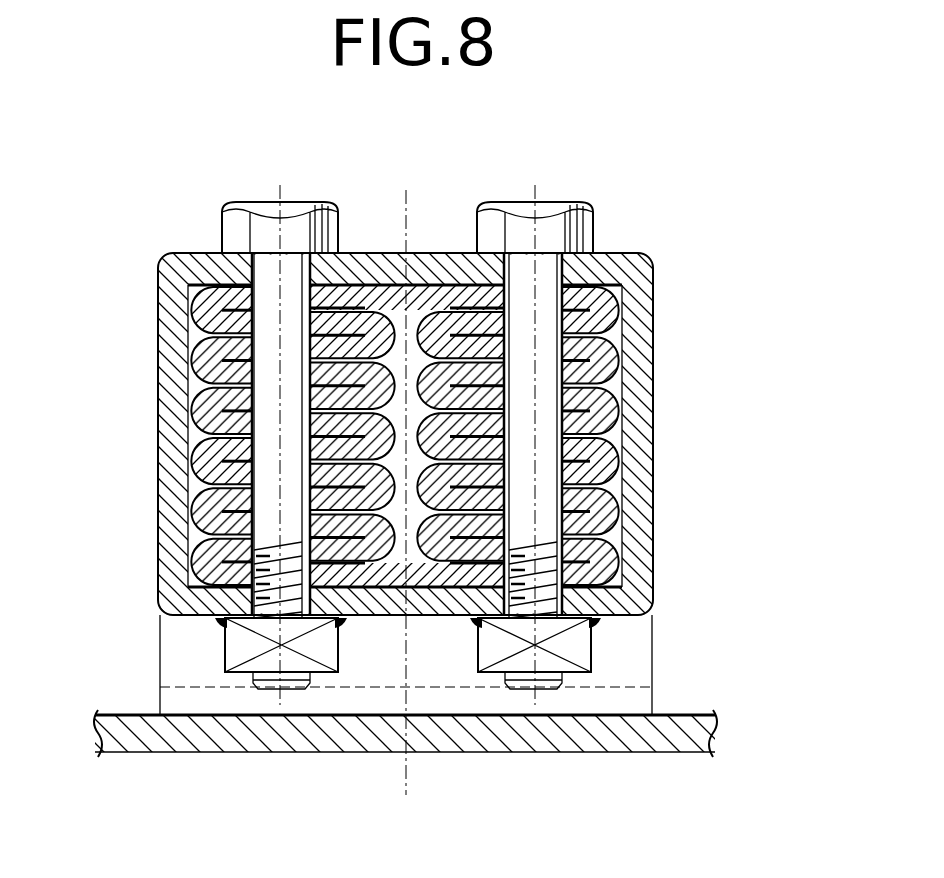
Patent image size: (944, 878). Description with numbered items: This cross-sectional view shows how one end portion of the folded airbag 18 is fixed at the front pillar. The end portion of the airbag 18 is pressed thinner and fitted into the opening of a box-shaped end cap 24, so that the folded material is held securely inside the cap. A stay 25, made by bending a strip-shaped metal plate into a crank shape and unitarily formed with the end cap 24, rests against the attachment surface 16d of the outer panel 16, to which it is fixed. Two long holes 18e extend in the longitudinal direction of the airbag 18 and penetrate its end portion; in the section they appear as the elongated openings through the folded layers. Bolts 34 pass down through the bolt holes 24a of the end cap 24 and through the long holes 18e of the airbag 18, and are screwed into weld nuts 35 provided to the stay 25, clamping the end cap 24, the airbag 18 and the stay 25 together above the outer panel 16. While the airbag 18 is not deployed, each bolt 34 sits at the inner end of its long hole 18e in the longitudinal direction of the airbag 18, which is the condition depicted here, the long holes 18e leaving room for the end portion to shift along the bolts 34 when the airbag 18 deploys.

The outer panel 16 is at (173, 762).
The attachment surface 16d is at (587, 753).
The airbag 18 is at (455, 283).
The long holes 18e is at (267, 400).
The end caps 24 is at (656, 355).
The bolt holes 24a is at (247, 278).
The stay 25 is at (427, 688).
The bolts 34 is at (293, 214).
The weld nuts 35 is at (272, 660).